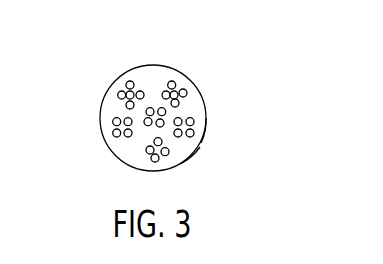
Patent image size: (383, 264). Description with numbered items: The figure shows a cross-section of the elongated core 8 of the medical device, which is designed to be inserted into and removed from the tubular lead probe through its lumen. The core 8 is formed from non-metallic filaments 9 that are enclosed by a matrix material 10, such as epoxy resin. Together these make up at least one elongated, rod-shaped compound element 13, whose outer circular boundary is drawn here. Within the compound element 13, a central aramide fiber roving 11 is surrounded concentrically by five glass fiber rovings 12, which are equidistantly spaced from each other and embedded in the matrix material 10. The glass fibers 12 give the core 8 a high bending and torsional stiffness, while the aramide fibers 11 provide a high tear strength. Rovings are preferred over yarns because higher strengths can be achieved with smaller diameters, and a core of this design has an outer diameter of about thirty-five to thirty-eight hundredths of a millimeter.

The core 8 is at (187, 76).
The non-metallic filaments 9 is at (187, 87).
The matrix material 10 is at (186, 146).
The aramide fibers 11 is at (147, 118).
The glass fiber bundles 12 is at (125, 87).
The compound element 13 is at (207, 121).